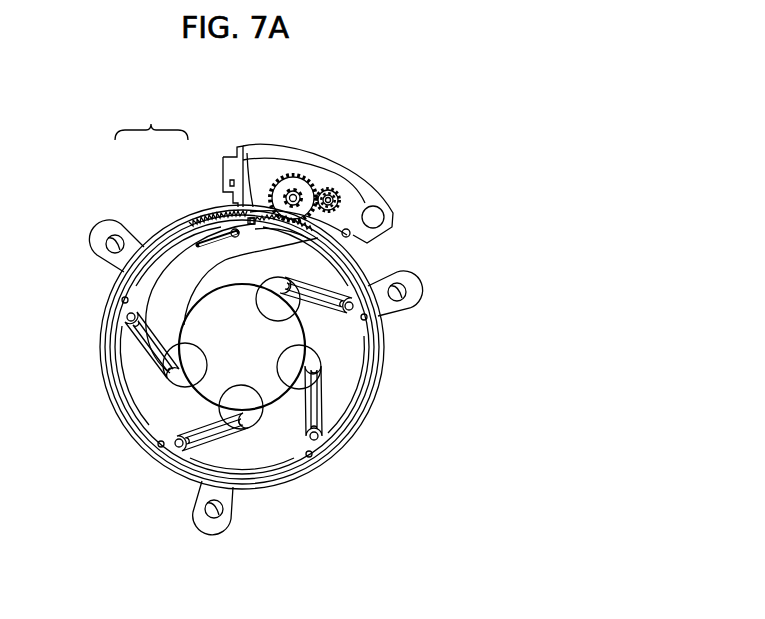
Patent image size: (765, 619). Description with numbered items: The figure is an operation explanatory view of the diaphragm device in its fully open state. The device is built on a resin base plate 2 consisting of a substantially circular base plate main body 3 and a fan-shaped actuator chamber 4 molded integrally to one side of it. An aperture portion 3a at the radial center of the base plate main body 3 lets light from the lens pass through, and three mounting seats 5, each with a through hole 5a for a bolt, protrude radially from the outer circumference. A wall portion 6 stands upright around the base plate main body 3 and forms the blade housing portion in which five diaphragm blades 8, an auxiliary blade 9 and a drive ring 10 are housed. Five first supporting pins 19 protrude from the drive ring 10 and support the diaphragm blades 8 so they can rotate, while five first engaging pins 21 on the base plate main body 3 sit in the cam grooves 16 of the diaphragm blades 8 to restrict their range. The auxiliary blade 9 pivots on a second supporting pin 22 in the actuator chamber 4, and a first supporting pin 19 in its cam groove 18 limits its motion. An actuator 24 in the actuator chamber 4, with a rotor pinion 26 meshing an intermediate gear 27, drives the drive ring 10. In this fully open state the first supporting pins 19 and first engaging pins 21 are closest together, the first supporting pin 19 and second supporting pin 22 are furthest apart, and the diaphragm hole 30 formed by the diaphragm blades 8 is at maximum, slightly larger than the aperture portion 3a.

The base plate 2 is at (151, 118).
The base plate main body 3 is at (183, 220).
The aperture portion 3a is at (354, 418).
The actuator chamber 4 is at (222, 160).
The mounting seat 5 is at (105, 230).
The through hole 5a is at (106, 244).
The wall portion 6 is at (311, 478).
The diaphragm blade 8 is at (138, 278).
The auxiliary blade 9 is at (190, 262).
The drive ring 10 is at (122, 392).
The cam groove 16 is at (148, 347).
The cam groove 18 is at (298, 226).
The first supporting pin 19 is at (248, 216).
The first engaging pin 21 is at (233, 230).
The second supporting pin 22 is at (350, 230).
The actuator 24 is at (275, 170).
The rotor pinion 26 is at (337, 197).
The intermediate gear 27 is at (303, 172).
The diaphragm hole 30 is at (262, 402).